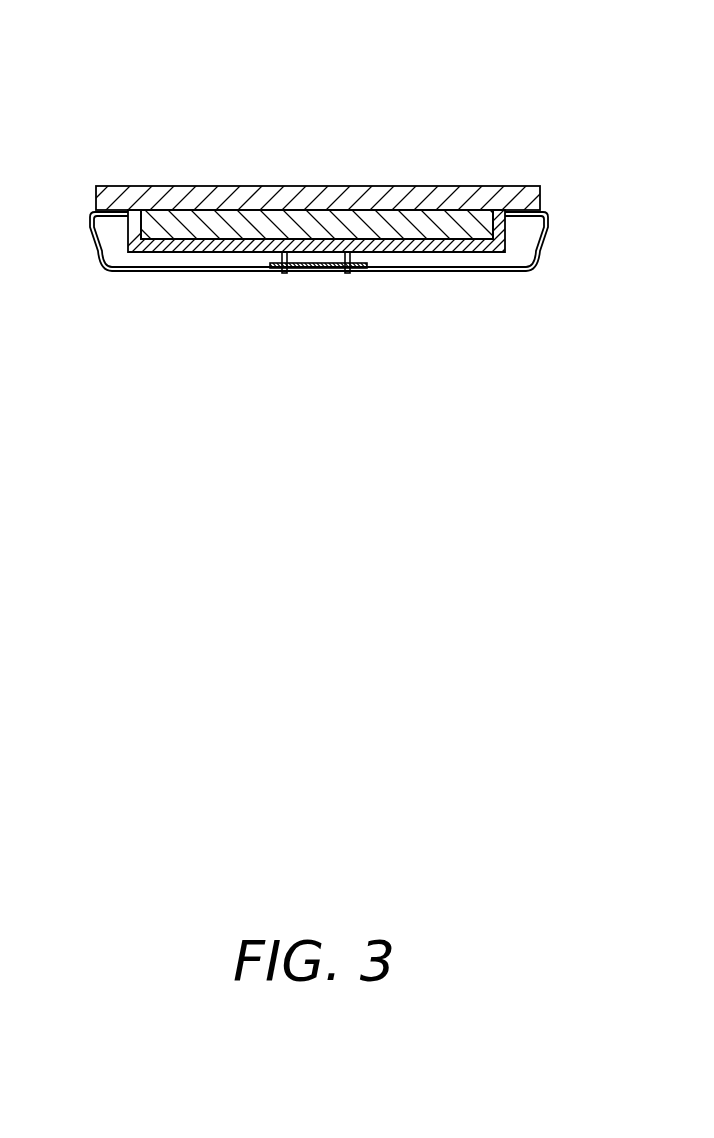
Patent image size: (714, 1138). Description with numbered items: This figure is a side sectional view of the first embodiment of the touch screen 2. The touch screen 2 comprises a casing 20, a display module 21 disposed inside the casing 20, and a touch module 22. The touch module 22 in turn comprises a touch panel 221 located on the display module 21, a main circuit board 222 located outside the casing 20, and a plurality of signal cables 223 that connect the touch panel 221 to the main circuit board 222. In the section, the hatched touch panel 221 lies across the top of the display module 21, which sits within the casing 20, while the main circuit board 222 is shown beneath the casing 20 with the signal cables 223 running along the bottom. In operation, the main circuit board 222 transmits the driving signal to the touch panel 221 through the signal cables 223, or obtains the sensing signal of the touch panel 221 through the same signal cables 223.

The touch screen 2 is at (320, 178).
The casing 20 is at (500, 232).
The display module 21 is at (333, 225).
The touch module 22 is at (321, 182).
The touch panel 221 is at (520, 186).
The main circuit board 222 is at (313, 273).
The signal cables 223 is at (156, 272).